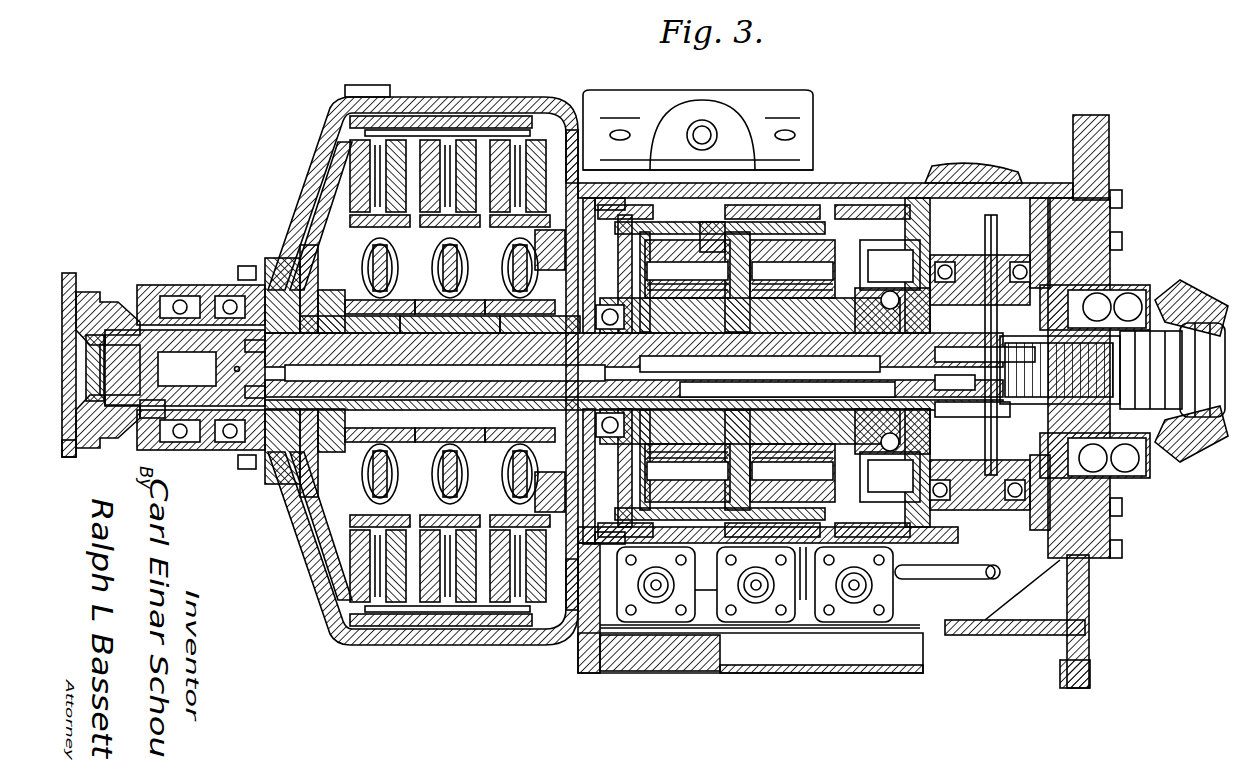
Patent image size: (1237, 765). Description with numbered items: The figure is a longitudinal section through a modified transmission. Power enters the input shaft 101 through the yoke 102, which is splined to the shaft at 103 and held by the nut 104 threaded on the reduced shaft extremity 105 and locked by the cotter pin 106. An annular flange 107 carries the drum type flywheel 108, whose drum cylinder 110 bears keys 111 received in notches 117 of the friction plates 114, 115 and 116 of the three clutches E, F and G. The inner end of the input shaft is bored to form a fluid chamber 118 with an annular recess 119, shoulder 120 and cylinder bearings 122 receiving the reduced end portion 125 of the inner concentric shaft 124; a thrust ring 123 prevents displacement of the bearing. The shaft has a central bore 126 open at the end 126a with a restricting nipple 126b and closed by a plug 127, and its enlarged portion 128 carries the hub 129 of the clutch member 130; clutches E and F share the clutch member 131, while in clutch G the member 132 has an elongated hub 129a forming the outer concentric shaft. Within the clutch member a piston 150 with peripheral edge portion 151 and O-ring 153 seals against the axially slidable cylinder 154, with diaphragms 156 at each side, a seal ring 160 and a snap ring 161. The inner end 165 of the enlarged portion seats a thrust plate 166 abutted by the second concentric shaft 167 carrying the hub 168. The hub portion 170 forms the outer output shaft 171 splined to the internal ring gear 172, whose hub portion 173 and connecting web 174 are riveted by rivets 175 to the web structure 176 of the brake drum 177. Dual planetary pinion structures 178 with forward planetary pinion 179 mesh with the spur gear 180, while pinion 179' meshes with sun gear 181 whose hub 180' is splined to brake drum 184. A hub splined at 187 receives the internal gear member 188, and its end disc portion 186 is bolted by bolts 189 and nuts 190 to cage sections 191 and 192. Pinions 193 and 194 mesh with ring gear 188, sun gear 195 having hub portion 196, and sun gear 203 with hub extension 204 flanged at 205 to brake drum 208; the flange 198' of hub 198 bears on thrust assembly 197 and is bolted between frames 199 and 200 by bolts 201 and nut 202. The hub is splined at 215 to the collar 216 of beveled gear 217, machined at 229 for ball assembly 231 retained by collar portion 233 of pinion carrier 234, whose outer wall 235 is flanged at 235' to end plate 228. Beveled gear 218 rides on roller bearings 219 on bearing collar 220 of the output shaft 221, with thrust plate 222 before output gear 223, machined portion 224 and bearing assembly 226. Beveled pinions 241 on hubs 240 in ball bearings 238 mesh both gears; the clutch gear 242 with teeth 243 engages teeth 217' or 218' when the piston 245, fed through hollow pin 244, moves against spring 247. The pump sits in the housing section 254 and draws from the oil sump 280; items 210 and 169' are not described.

The yoke 102 is at (88, 290).
The nut 104 is at (88, 310).
The input shaft 101 is at (118, 305).
The cotter pin 106 is at (92, 400).
The reduced shaft extremity 105 is at (78, 440).
The spline 103 is at (160, 420).
The input housing section 254 is at (196, 287).
The nipple 126b is at (240, 460).
The hub 129 is at (318, 285).
The fluid chamber 118 is at (570, 373).
The shoulder 120 is at (258, 348).
The cylinder bearings 122 is at (250, 368).
The annular recess 119 is at (262, 394).
The open end of bore 126a is at (297, 360).
The reduced end portion 125 is at (335, 360).
The enlarged portion 128 is at (367, 360).
The inner end of enlarged portion 165 is at (393, 360).
The thrust plate 166 is at (417, 360).
The inner concentric shaft 124 is at (450, 360).
The central bore 126 is at (480, 360).
The elongated hub 129a is at (533, 360).
The outer concentric output shaft 171 is at (583, 360).
The second concentric shaft 167 is at (450, 340).
The hub of second dry clutch assembly 168 is at (440, 340).
The friction plate 116 is at (555, 128).
The clutch E is at (395, 85).
The clutch F is at (470, 97).
The clutch G is at (540, 108).
The friction plate 114 is at (420, 116).
The drum cylinder 110 is at (440, 118).
The clutch member 130 is at (445, 130).
The clutch member 131 is at (455, 130).
The friction plate 115 is at (485, 140).
The keys 111 is at (520, 116).
The clutch member 132 is at (552, 368).
The notches 117 is at (355, 650).
The peripheral edge portion 151 is at (362, 238).
The O-ring 153 is at (360, 250).
The seal ring 160 is at (360, 262).
The snap ring 161 is at (422, 371).
The thrust ring 123 is at (280, 480).
The annular flange 107 is at (288, 492).
The drum type flywheel 108 is at (296, 505).
The piston 150 is at (305, 515).
The diaphragm 156 is at (312, 525).
The cylinder 154 is at (318, 538).
The gearbox housing 210 is at (690, 198).
The internal ring gear 172 is at (640, 222).
The brake drum 177 is at (615, 205).
The planetary pinion 179' is at (717, 208).
The brake drum 184 is at (760, 205).
The internal gear member 188 is at (810, 222).
The forward planetary pinion 179 is at (705, 353).
The web structure 176 is at (628, 240).
The hub portion 170 is at (628, 262).
The rivets 175 is at (628, 284).
The spur gear 180 is at (687, 269).
The dual planetary pinion structures 178 is at (698, 272).
The pinion 193 is at (792, 269).
The pinion 194 is at (812, 272).
The collar portion 233 is at (892, 283).
The sun gear 203 is at (878, 256).
The hub extension 204 is at (880, 270).
The shaft portion 169' is at (655, 363).
The sun gear 181 is at (710, 363).
The hub 180' is at (748, 363).
The splined hub extremity 187 is at (791, 363).
The hub 198 is at (852, 364).
The hub portion 196 is at (770, 388).
The collar 216 is at (873, 389).
The hub portion 173 is at (628, 470).
The connecting web 174 is at (630, 490).
The nuts 190 is at (640, 505).
The end disc portion 186 is at (687, 482).
The sun gear 195 is at (786, 473).
The nut 202 is at (772, 516).
The flange 198' is at (825, 469).
The thrust assembly 197 is at (829, 485).
The bolts 201 is at (832, 502).
The pinion carrier frame 200 is at (863, 523).
The splined outer end 215 is at (892, 455).
The ball assembly 231 is at (880, 505).
The flange 205 is at (880, 521).
The bolts 189 is at (656, 584).
The pinion carrier cage section 191 is at (680, 572).
The pinion carrier cage section 192 is at (707, 571).
The pinion carrier frame 199 is at (805, 584).
The oil sump 280 is at (750, 673).
The brake drum 208 is at (990, 588).
The roller bearings 219 is at (1105, 265).
The bearing collar 220 is at (1075, 330).
The machined portion 224 is at (1130, 425).
The output shaft 221 is at (1077, 370).
The spring 247 is at (1141, 375).
The thrust plate 222 is at (1172, 370).
The output gear 223 is at (1185, 292).
The bearing assembly 226 is at (1160, 470).
The teeth 217' is at (975, 267).
The clutch gear 242 is at (997, 262).
The teeth 218' is at (1050, 244).
The hollow pin 244 is at (947, 353).
The teeth 243 is at (988, 353).
The piston 245 is at (1005, 381).
The plug 127 is at (951, 382).
The machined portion 229 is at (947, 408).
The beveled gear 217 is at (977, 494).
The pinion carrier 234 is at (938, 532).
The ball bearing 238 is at (1000, 510).
The hub 240 is at (1000, 536).
The beveled pinions 241 is at (992, 551).
The beveled gear 218 is at (1043, 524).
The outer wall 235 is at (1040, 541).
The end plate 228 is at (1110, 500).
The flange 235' is at (1131, 546).